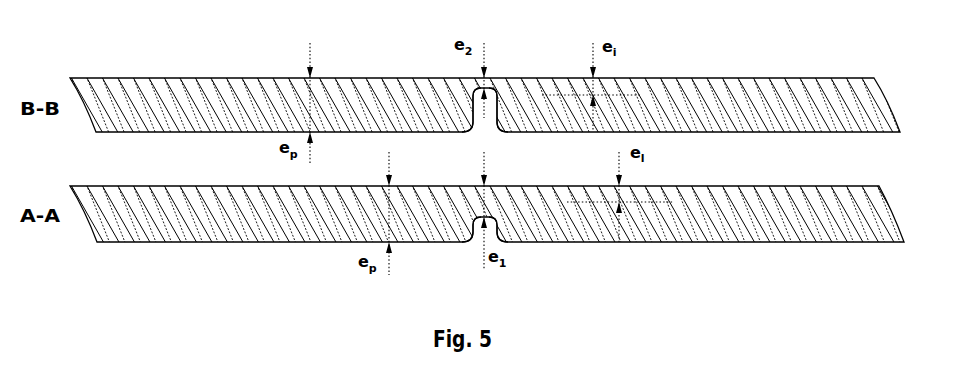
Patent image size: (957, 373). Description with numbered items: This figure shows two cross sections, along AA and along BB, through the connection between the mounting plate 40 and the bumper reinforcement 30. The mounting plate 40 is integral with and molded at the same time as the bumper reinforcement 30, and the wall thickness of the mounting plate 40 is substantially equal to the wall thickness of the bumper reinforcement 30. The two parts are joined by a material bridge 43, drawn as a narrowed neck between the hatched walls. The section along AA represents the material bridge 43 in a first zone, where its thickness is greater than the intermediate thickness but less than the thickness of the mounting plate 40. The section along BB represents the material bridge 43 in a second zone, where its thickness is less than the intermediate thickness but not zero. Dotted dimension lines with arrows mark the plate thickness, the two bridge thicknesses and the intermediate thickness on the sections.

The bumper reinforcement 30 is at (774, 78).
The mounting plate 40 is at (213, 88).
The material bridge 43 is at (492, 78).